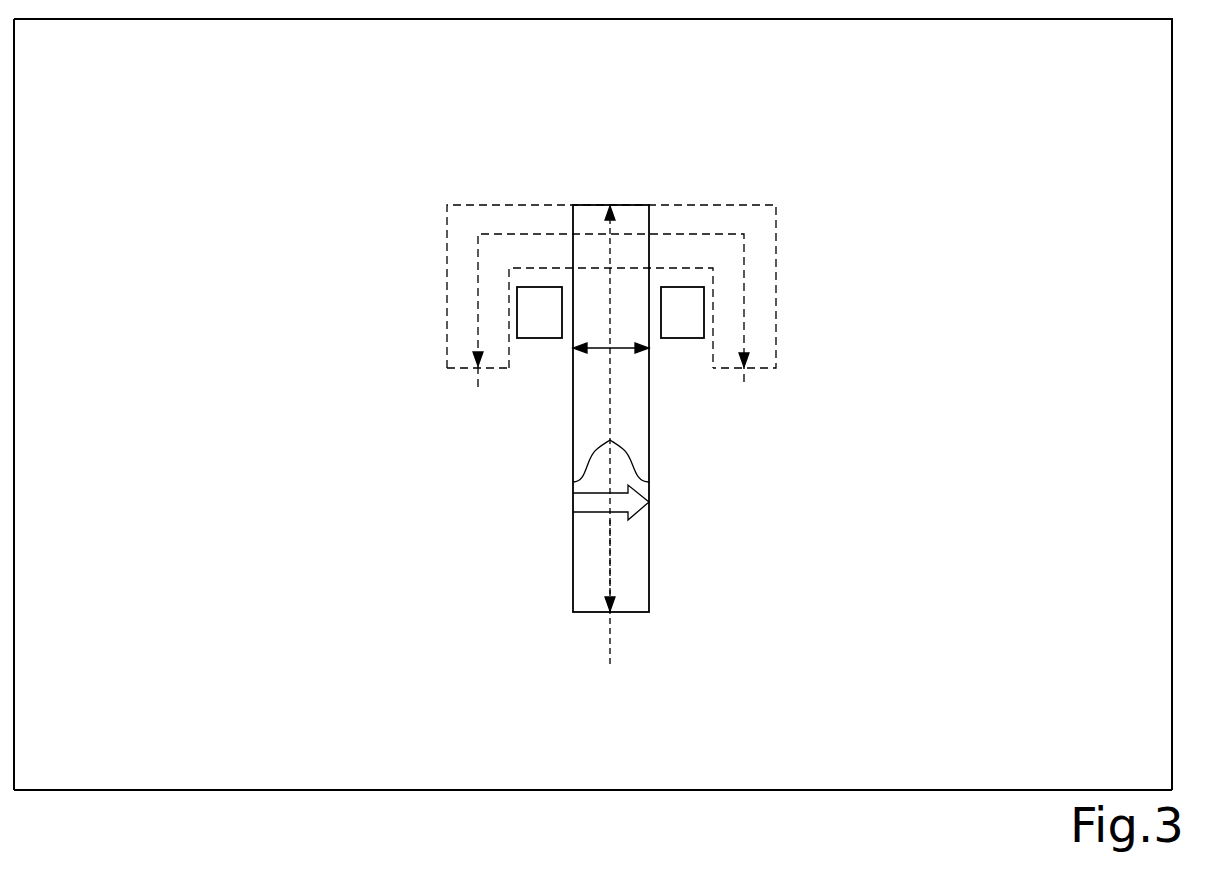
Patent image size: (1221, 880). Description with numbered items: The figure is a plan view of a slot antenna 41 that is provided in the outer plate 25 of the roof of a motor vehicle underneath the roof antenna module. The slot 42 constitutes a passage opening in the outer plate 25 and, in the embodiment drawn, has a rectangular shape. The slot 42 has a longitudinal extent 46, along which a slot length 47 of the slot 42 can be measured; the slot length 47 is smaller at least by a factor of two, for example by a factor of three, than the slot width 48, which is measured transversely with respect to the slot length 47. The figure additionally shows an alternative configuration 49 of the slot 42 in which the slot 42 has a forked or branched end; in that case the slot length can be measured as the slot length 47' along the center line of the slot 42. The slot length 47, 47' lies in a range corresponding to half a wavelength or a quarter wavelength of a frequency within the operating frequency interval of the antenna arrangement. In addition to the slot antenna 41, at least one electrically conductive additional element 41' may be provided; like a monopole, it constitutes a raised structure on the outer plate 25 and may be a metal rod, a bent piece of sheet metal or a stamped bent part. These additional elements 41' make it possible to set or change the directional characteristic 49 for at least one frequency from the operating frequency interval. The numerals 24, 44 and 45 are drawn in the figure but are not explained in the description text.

The surface / plane 24 is at (912, 637).
The outer plate 25 is at (543, 790).
The slot antenna 41 is at (627, 493).
The electrically conductive additional element 41' is at (612, 295).
The slot 42 is at (575, 595).
The width of sensor strip 44 is at (611, 448).
The direction of movement 45 is at (590, 512).
The longitudinal extent 46 is at (608, 552).
The slot length 47 is at (624, 409).
The slot length 47' is at (613, 310).
The slot width 48 is at (615, 348).
The alternative configuration 49 is at (447, 234).